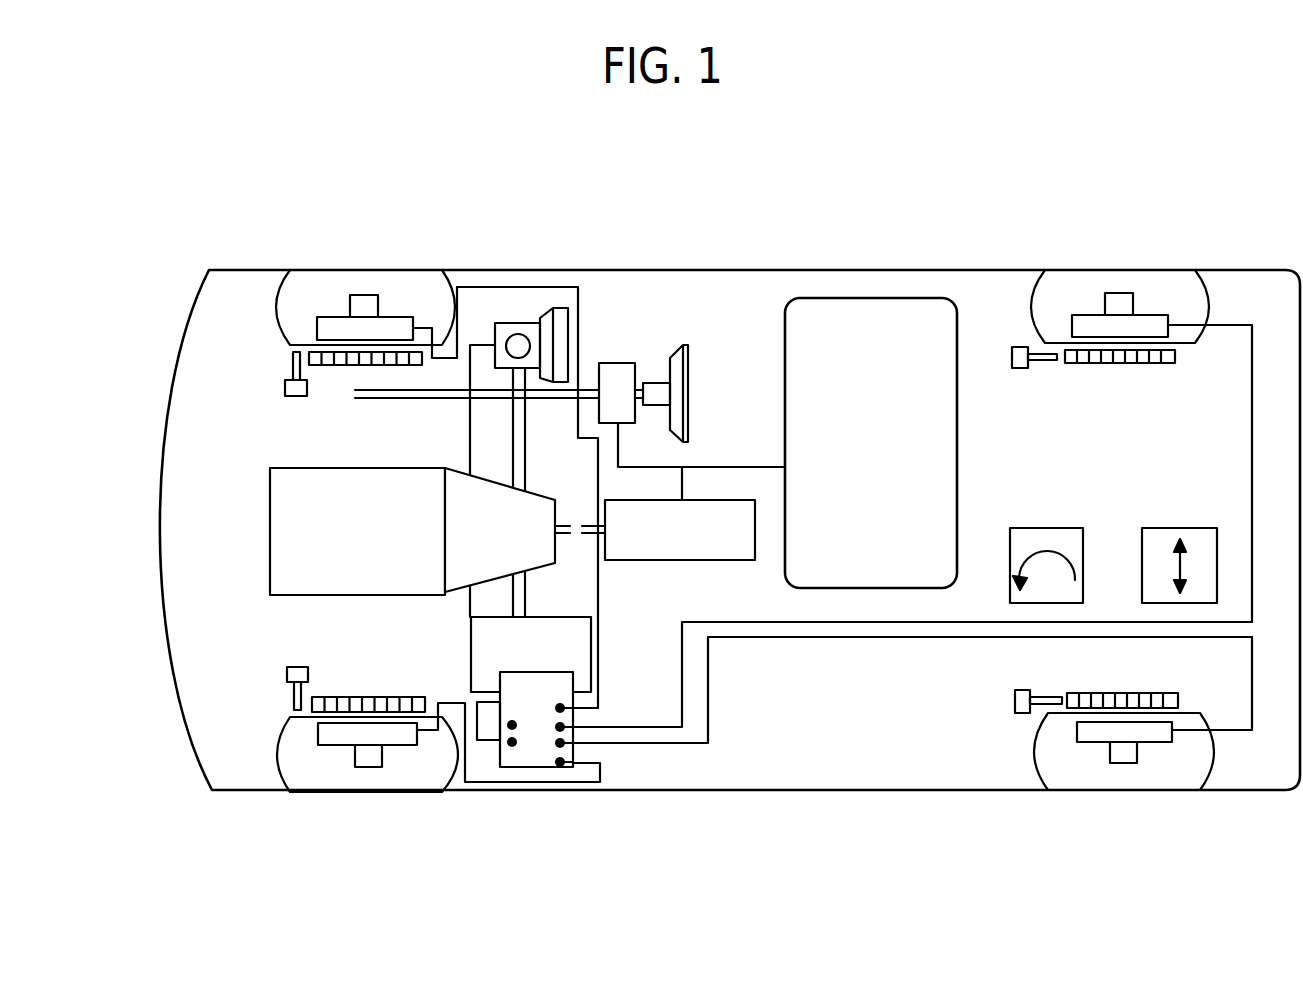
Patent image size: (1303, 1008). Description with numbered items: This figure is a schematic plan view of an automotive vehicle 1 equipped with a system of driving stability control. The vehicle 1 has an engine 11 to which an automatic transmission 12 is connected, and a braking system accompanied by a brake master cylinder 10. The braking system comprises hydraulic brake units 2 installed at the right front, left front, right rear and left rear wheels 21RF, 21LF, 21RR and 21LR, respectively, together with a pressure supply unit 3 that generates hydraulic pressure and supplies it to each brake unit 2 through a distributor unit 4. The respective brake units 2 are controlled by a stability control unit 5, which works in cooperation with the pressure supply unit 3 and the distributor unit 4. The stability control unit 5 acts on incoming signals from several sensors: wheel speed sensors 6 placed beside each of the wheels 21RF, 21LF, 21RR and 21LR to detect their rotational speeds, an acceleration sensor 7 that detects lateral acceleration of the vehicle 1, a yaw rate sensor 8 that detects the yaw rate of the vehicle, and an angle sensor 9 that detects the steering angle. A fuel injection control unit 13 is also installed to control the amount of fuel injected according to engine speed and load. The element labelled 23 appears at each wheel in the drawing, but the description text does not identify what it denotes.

The automotive vehicle 1 is at (166, 384).
The hydraulic brake unit 2 is at (398, 316).
The pressure supply unit 3 is at (471, 642).
The distributor unit 4 is at (545, 767).
The stability control unit 5 is at (865, 298).
The wheel speed sensor 6 is at (333, 366).
The acceleration sensor 7 is at (1170, 528).
The yaw rate sensor 8 is at (1043, 528).
The angle sensor 9 is at (633, 363).
The brake master cylinder 10 is at (520, 323).
The engine 11 is at (270, 552).
The automatic transmission 12 is at (540, 488).
The fuel injection control unit 13 is at (693, 560).
The right front wheel 21RF is at (285, 268).
The left front wheel 21LF is at (285, 790).
The right rear wheel 21RR is at (1200, 275).
The left rear wheel 21LR is at (1200, 788).
The tire 23 is at (430, 280).